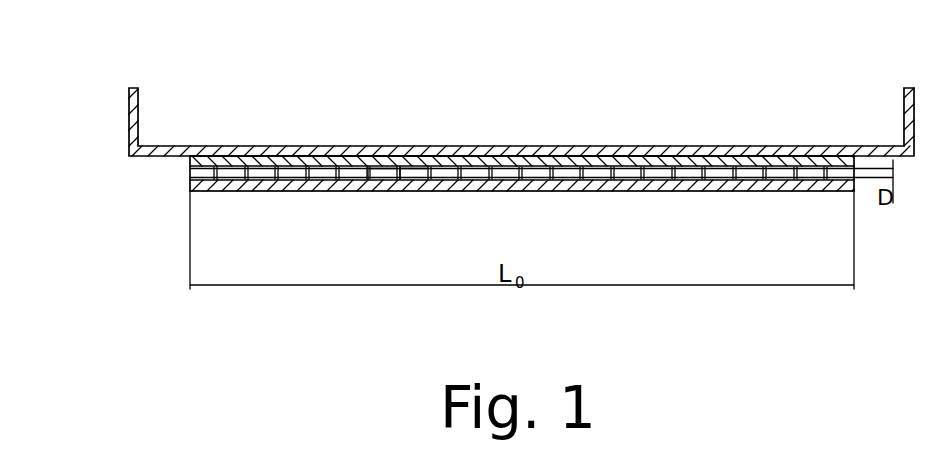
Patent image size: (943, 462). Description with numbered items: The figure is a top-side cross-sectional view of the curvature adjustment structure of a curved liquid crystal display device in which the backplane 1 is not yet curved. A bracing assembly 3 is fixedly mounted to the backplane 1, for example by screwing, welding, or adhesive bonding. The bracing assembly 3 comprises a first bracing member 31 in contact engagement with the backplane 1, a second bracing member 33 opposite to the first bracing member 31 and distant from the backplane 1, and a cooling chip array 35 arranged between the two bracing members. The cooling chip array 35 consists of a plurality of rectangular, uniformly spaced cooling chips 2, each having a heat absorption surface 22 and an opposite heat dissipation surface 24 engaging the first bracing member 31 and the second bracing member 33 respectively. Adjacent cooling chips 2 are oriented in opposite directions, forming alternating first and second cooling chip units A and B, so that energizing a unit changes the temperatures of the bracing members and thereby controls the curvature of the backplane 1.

The backplane 1 is at (460, 130).
The cooling chip 2 is at (374, 179).
The heat absorption surface 22 is at (408, 162).
The heat dissipation surface 24 is at (385, 170).
The bracing assembly 3 is at (460, 190).
The first bracing member 31 is at (190, 165).
The second bracing member 33 is at (190, 190).
The cooling chip array 35 is at (190, 176).